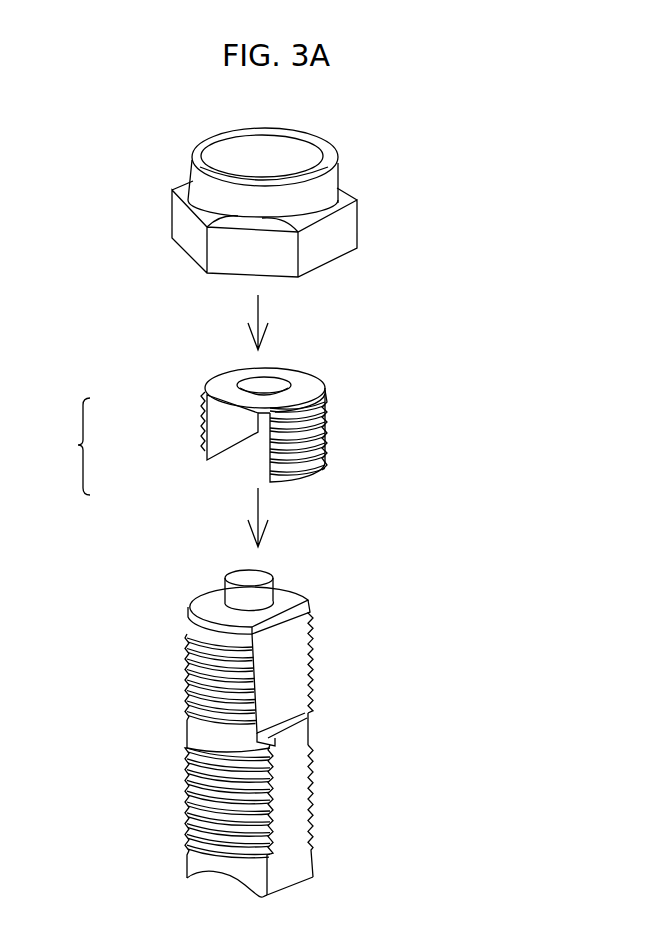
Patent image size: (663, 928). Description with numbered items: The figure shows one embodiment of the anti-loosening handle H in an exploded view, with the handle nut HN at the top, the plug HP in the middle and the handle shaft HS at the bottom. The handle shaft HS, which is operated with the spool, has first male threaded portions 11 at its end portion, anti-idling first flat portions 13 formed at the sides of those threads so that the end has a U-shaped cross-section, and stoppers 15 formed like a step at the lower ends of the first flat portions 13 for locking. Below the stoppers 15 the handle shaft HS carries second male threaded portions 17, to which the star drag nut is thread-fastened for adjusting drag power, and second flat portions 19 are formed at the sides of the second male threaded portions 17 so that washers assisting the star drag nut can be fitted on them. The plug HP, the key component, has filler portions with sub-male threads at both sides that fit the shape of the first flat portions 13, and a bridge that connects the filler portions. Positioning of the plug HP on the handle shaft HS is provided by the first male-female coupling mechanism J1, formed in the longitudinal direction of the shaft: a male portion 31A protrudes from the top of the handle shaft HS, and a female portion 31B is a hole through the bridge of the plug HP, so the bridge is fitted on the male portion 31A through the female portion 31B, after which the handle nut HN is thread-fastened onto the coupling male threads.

The anti-loosening handle H is at (74, 153).
The handle nut HN is at (378, 230).
The plug HP is at (378, 434).
The handle shaft HS is at (370, 775).
The first male-female coupling mechanism J1 is at (72, 446).
The male portion 31A is at (247, 582).
The female portion 31B is at (258, 393).
The first male threaded portions 11 is at (197, 658).
The first flat portions 13 is at (283, 673).
The stoppers 15 is at (290, 730).
The second male threaded portions 17 is at (188, 806).
The second flat portions 19 is at (297, 847).